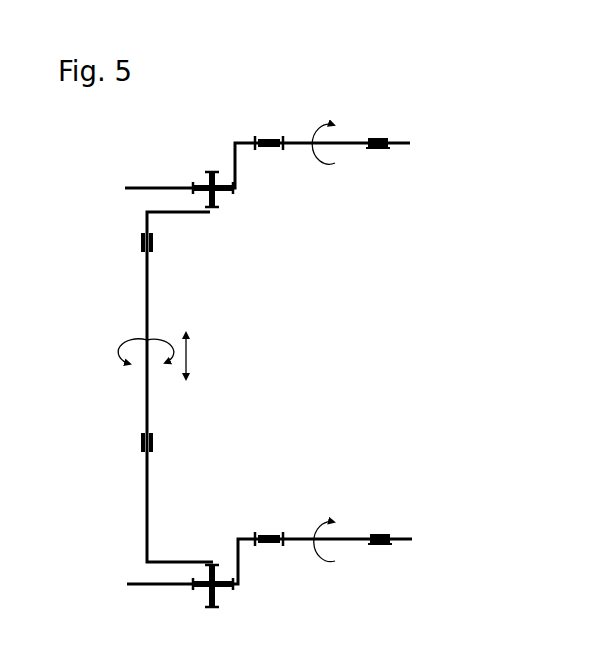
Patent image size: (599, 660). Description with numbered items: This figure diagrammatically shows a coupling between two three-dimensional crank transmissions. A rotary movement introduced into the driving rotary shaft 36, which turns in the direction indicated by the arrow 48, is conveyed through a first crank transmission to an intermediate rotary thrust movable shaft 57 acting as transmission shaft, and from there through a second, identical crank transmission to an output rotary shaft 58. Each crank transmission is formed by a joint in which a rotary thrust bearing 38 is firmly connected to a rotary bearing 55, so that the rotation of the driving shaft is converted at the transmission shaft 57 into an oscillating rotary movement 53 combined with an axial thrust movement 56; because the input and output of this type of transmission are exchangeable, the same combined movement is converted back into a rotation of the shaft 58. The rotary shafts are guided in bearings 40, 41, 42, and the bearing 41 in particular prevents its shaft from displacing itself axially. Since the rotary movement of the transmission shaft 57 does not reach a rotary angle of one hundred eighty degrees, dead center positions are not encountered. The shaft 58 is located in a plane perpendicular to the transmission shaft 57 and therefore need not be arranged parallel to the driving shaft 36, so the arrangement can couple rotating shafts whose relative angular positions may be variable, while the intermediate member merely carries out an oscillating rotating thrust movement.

The rotary shaft 36 is at (403, 145).
The rotary thrust bearing 38 is at (202, 185).
The bearing 40 is at (377, 136).
The bearing 41 is at (267, 138).
The bearing 42 is at (140, 242).
The arrow 48 is at (317, 124).
The oscillating rotary movement 53 is at (127, 348).
The rotary bearing 55 is at (220, 200).
The thrust movement 56 is at (190, 355).
The rotary thrust movable shaft 57 is at (147, 507).
The rotary shaft 58 is at (405, 545).